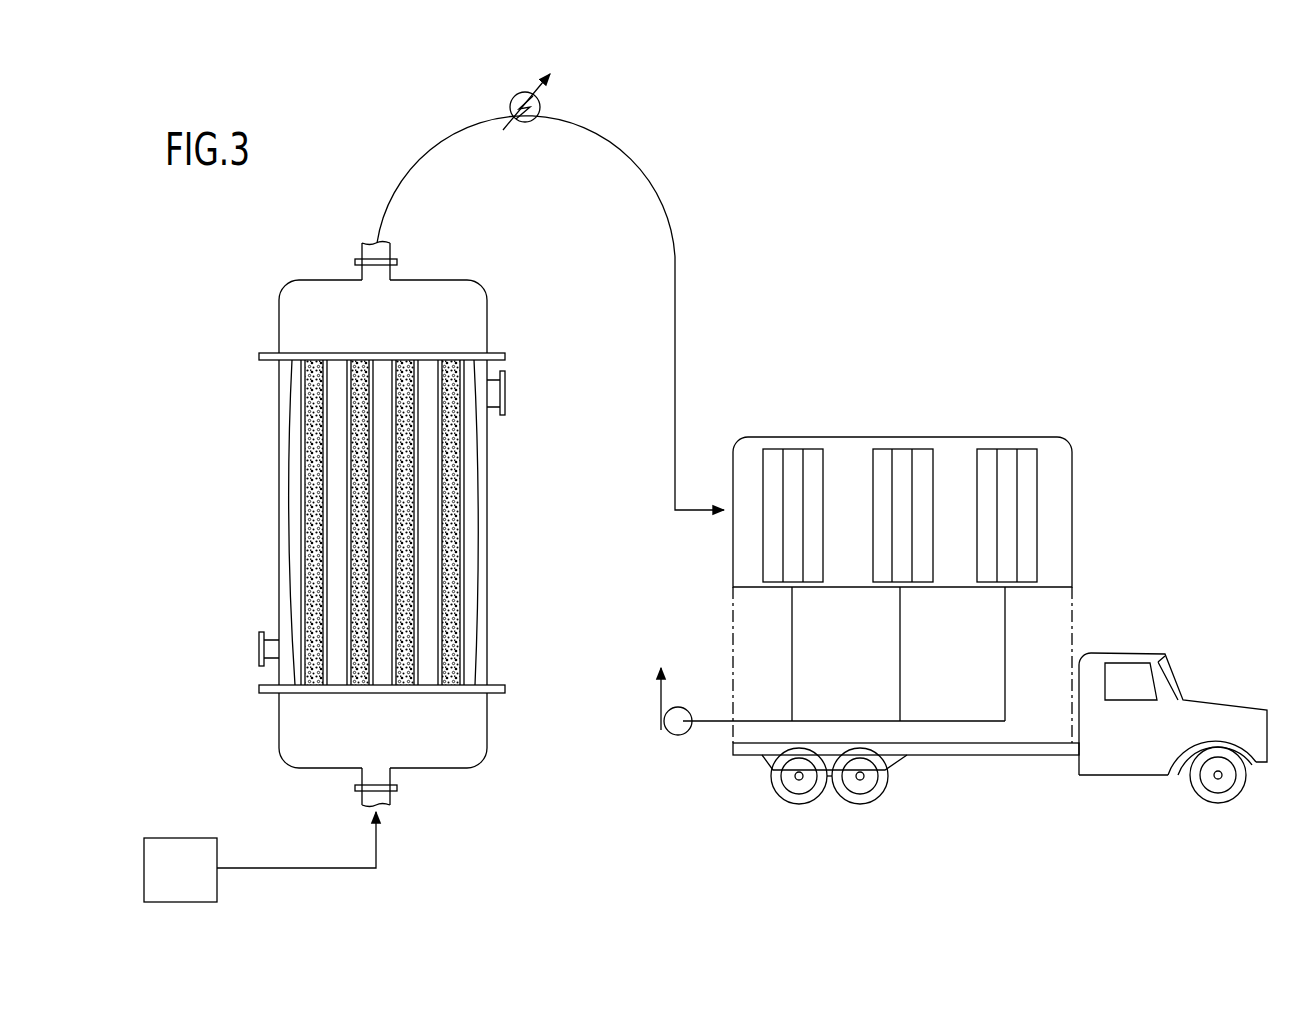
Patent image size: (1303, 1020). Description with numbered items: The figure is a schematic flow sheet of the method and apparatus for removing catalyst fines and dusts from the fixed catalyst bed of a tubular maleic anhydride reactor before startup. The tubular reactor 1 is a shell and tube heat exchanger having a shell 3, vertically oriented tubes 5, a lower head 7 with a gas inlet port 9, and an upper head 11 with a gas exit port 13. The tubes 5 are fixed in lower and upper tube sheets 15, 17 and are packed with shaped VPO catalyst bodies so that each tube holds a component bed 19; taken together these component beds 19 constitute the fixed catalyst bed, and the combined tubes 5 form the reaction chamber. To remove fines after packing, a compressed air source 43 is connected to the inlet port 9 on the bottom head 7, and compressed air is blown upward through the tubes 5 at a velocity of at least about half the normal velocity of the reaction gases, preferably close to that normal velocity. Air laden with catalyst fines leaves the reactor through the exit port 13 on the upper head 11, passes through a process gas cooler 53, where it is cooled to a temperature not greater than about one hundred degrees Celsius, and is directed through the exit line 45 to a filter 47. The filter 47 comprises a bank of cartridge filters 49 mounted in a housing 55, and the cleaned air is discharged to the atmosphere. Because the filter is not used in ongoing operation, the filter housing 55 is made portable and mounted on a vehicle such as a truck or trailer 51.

The tubular reactor 1 is at (268, 496).
The shell 3 is at (278, 593).
The vertically oriented tubes 5 is at (467, 476).
The lower head 7 is at (278, 740).
The gas inlet port 9 is at (393, 789).
The upper head 11 is at (489, 318).
The gas exit port 13 is at (395, 258).
The lower tube sheet 15 is at (337, 692).
The upper tube sheet 17 is at (422, 358).
The component bed 19 is at (462, 585).
The compressed air source 43 is at (167, 838).
The exit line 45 is at (663, 188).
The filter 47 is at (905, 437).
The cartridge filters 49 is at (1024, 553).
The truck or trailer 51 is at (944, 770).
The process gas cooler 53 is at (511, 97).
The housing 55 is at (997, 437).